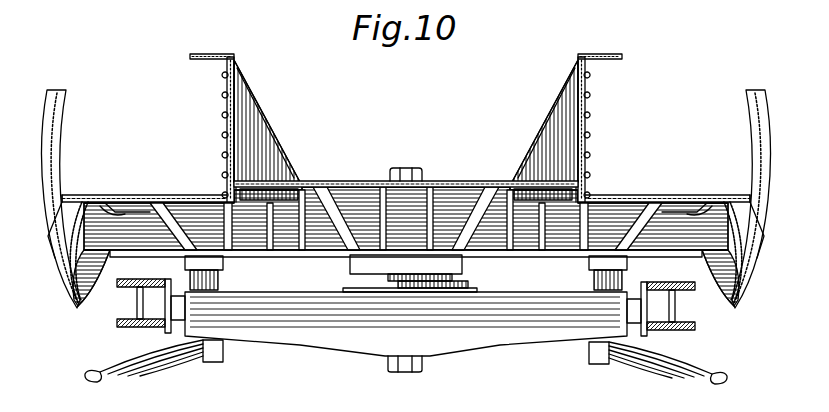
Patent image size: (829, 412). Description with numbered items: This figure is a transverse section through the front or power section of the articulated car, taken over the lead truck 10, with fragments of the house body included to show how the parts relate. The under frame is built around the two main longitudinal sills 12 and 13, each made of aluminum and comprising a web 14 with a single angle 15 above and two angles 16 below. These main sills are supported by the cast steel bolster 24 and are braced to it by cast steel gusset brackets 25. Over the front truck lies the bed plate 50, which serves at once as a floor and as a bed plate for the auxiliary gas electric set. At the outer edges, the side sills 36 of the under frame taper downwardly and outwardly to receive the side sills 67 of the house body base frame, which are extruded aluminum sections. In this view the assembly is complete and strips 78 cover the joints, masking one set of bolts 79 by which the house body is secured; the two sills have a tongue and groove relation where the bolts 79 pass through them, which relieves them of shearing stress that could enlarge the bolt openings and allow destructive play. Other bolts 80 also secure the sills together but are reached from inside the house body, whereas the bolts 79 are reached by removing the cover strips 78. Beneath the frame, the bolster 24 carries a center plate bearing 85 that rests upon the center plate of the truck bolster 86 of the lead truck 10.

The lead truck 10 is at (451, 361).
The main longitudinal sill 12 is at (224, 103).
The main longitudinal sill 13 is at (590, 134).
The web 14 is at (227, 122).
The angle 15 is at (213, 60).
The angles 16 is at (242, 177).
The bolster 24 is at (332, 243).
The gusset brackets 25 is at (260, 135).
The side sills of the under frame 36 is at (95, 195).
The bed plate 50 is at (452, 181).
The side sills of the base frame 67 is at (75, 195).
The cover strips 78 is at (63, 268).
The bolts 79 is at (62, 256).
The bolts 80 is at (112, 208).
The center plate bearing 85 is at (456, 279).
The truck bolster 86 is at (406, 325).